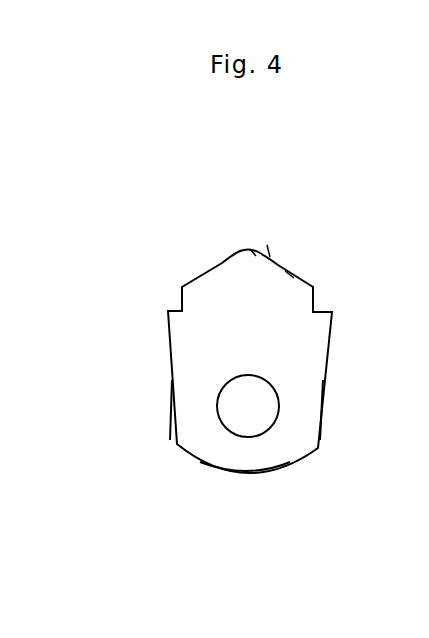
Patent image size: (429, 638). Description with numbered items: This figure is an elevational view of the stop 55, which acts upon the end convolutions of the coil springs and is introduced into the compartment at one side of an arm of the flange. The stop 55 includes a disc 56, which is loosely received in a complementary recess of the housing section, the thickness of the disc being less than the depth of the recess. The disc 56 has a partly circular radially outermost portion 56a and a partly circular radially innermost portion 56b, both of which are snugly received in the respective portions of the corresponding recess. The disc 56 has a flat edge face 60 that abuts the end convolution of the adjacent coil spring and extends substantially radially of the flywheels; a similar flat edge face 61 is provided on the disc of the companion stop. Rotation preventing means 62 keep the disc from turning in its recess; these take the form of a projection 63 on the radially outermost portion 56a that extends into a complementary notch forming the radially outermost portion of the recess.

The stop 55 is at (313, 480).
The disc 56 is at (228, 352).
The radially outermost portion 56a is at (290, 274).
The radially innermost portion 56b is at (202, 443).
The flat edge face 60 is at (173, 410).
The flat edge face 61 is at (320, 423).
The rotation preventing means 62 is at (269, 255).
The projection 63 is at (254, 251).